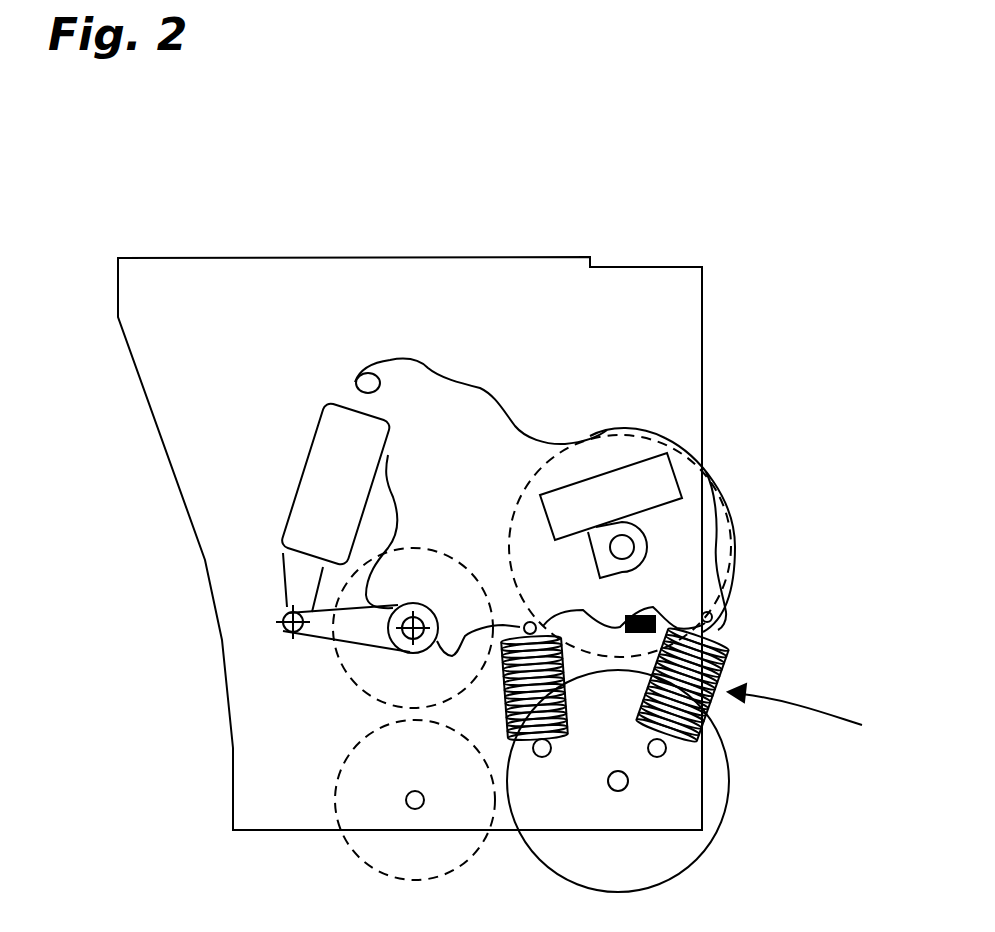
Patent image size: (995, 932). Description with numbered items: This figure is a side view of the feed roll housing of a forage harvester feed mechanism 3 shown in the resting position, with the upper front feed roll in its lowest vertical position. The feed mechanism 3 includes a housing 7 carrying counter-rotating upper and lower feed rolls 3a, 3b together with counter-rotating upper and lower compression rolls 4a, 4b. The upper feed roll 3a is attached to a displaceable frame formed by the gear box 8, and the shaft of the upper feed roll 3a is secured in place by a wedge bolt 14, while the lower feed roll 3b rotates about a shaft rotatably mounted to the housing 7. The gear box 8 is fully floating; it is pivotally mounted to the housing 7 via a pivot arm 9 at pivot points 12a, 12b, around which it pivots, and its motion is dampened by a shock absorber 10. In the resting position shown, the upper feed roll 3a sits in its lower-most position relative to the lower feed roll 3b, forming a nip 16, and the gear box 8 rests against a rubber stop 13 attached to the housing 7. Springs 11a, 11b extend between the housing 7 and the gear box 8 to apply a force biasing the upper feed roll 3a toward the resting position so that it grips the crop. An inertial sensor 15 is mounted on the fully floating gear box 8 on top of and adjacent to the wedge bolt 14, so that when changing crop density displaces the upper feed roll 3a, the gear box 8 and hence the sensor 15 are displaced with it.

The feed mechanism 3 is at (792, 338).
The upper feed roll 3a is at (735, 532).
The lower feed roll 3b is at (732, 803).
The upper compression roll 4a is at (368, 695).
The lower compression roll 4b is at (358, 865).
The housing 7 is at (418, 258).
The gear box 8 is at (478, 388).
The pivot arm 9 is at (345, 627).
The shock absorber 10 is at (328, 416).
The spring 11a is at (727, 665).
The spring 11b is at (568, 703).
The pivot point 12a is at (398, 649).
The pivot point 12b is at (285, 628).
The rubber stop 13 is at (655, 622).
The wedge bolt 14 is at (588, 553).
The inertial sensor 15 is at (673, 476).
The nip 16 is at (812, 713).